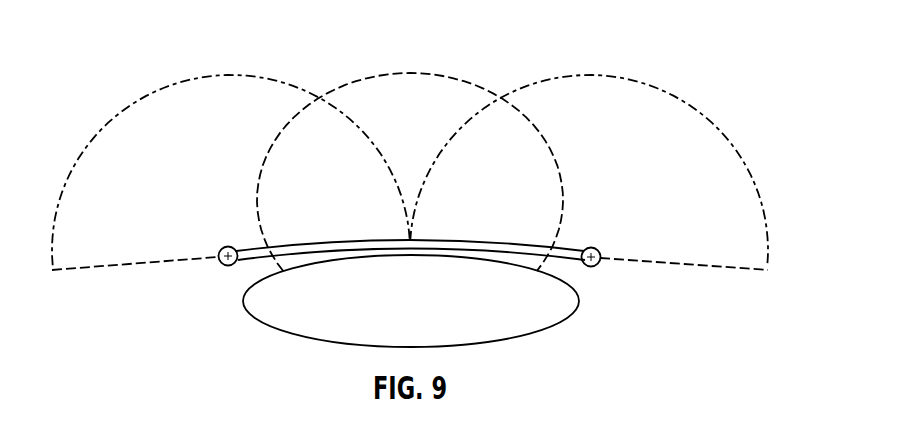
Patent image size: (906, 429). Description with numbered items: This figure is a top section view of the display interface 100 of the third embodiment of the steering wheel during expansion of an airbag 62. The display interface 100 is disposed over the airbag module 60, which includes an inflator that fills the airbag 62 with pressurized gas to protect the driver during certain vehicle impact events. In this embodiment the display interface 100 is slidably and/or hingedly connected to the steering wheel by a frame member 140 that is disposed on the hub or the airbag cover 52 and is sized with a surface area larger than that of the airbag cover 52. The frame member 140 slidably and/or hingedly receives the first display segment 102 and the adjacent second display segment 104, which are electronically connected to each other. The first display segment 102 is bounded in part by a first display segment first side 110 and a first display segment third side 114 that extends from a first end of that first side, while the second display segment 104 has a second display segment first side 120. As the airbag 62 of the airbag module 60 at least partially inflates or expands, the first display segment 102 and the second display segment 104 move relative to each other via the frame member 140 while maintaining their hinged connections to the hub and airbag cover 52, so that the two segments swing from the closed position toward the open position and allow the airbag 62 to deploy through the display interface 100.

The airbag cover 52 is at (241, 266).
The airbag module 60 is at (428, 72).
The airbag 62 is at (543, 338).
The display interface 100 is at (450, 247).
The first display segment 102 is at (123, 94).
The second display segment 104 is at (700, 95).
The first display segment first side 110 is at (220, 261).
The first display segment third side 114 is at (97, 272).
The second display segment first side 120 is at (598, 265).
The frame member 140 is at (571, 268).